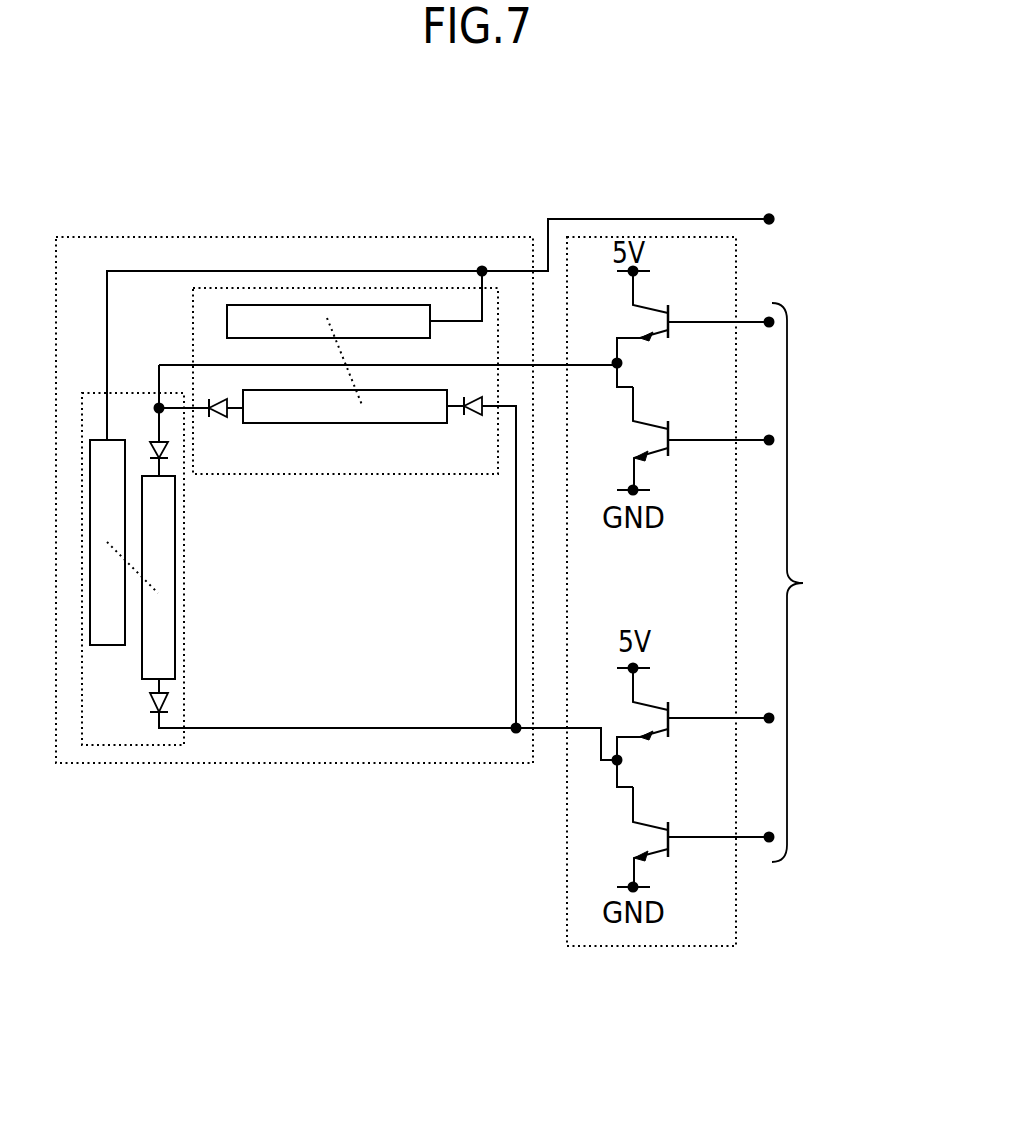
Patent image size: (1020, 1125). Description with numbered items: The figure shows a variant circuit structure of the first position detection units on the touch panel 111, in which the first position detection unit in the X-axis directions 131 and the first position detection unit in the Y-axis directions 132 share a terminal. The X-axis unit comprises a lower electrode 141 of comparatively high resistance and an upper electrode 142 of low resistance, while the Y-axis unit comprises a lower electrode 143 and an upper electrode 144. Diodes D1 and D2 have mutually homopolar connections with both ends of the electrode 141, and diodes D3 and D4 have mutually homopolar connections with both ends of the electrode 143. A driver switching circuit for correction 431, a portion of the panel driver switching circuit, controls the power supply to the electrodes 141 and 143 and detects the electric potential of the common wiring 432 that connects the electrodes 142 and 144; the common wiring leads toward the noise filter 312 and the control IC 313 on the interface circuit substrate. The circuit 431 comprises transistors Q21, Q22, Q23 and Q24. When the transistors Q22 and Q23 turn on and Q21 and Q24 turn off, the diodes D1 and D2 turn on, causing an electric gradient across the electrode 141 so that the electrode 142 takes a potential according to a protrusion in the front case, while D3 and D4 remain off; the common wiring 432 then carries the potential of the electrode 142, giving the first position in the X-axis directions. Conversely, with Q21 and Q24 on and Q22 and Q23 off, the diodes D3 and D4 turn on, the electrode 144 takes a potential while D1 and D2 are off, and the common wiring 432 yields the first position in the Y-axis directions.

The touch panel 111 is at (342, 763).
The first position detection unit in the X-axis directions 131 is at (322, 474).
The first position detection unit in the Y-axis directions 132 is at (187, 515).
The lower electrode 141 is at (400, 425).
The upper electrode 142 is at (325, 315).
The lower electrode 143 is at (176, 651).
The upper electrode 144 is at (103, 637).
The noise filter 312 is at (799, 220).
The control IC 313 is at (812, 582).
The driver switching circuit for correction 431 is at (740, 525).
The common wiring 432 is at (673, 218).
The diode D1 is at (476, 428).
The diode D2 is at (219, 424).
The diode D3 is at (138, 697).
The diode D4 is at (143, 432).
The transistor Q21 is at (678, 329).
The transistor Q22 is at (678, 438).
The transistor Q23 is at (677, 727).
The transistor Q24 is at (677, 837).